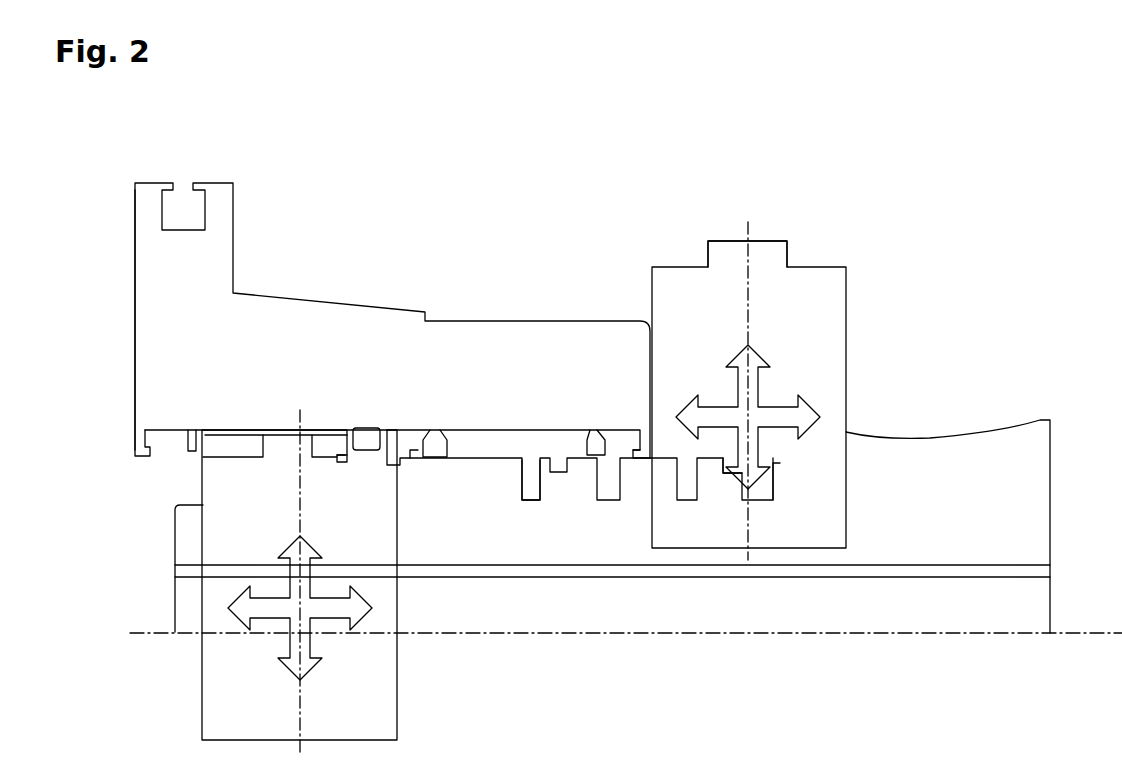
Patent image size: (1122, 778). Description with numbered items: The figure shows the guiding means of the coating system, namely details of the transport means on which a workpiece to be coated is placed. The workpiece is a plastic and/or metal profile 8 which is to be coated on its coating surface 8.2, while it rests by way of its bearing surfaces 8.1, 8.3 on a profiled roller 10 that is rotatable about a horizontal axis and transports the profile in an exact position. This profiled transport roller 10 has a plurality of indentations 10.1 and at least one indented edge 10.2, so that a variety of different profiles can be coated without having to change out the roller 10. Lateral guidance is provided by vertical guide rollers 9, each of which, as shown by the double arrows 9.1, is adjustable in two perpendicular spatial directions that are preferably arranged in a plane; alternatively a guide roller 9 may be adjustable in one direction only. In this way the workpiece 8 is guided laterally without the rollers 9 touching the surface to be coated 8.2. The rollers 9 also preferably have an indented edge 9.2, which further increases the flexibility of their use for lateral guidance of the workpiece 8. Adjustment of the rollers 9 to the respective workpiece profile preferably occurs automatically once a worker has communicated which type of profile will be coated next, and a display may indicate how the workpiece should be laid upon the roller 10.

The workpiece 8 is at (329, 268).
The bearing surface 8.1 is at (645, 382).
The coating surface 8.2 is at (133, 357).
The bearing surface 8.3 is at (432, 442).
The guide roller 9 is at (817, 300).
The orientation 9.1 is at (748, 417).
The indented edge 9.2 is at (790, 250).
The profiled roller 10 is at (632, 610).
The indentation 10.1 is at (528, 505).
The indented edge 10.2 is at (777, 447).